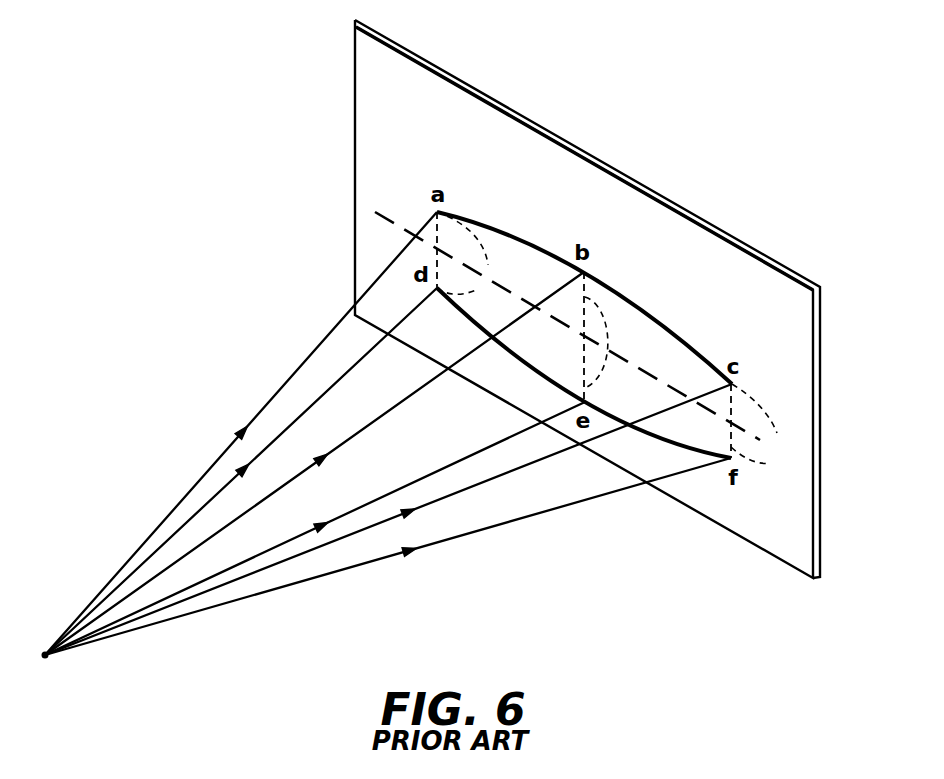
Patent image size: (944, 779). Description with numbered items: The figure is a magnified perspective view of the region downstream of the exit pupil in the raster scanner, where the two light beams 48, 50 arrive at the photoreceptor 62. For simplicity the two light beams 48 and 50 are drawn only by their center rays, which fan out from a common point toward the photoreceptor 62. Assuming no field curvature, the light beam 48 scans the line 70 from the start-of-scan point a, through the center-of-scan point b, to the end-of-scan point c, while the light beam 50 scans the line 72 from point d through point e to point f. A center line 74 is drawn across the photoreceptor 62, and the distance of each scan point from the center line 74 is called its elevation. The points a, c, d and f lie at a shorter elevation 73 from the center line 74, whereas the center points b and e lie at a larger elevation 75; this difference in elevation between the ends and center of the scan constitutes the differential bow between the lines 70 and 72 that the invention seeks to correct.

The light beam 48 is at (240, 514).
The light beam 50 is at (340, 379).
The photoreceptor 62 is at (680, 212).
The scan line 70 is at (663, 322).
The scan line 72 is at (660, 442).
The elevation at start and end of scan 73 is at (620, 339).
The center line 74 is at (390, 220).
The elevation at center of scan 75 is at (605, 342).